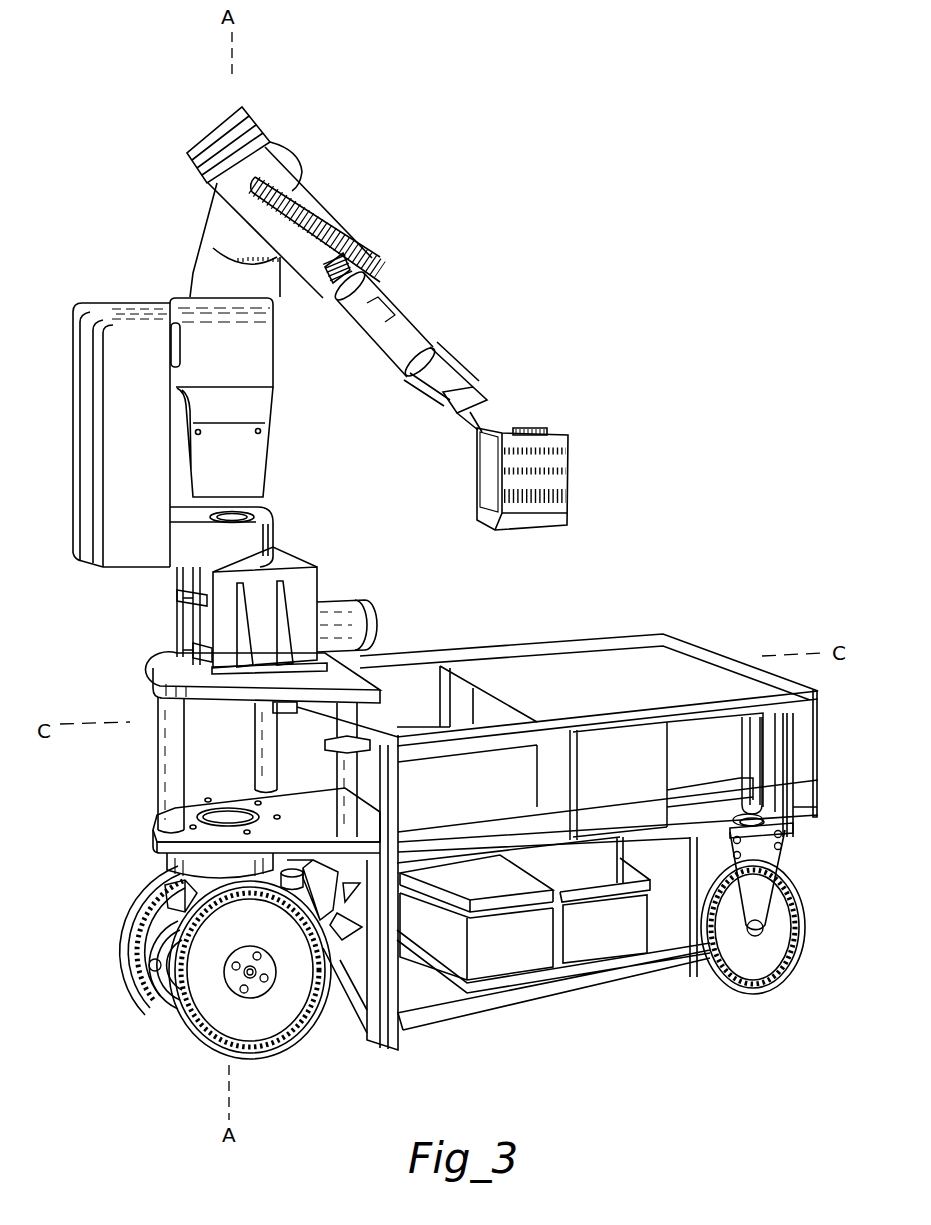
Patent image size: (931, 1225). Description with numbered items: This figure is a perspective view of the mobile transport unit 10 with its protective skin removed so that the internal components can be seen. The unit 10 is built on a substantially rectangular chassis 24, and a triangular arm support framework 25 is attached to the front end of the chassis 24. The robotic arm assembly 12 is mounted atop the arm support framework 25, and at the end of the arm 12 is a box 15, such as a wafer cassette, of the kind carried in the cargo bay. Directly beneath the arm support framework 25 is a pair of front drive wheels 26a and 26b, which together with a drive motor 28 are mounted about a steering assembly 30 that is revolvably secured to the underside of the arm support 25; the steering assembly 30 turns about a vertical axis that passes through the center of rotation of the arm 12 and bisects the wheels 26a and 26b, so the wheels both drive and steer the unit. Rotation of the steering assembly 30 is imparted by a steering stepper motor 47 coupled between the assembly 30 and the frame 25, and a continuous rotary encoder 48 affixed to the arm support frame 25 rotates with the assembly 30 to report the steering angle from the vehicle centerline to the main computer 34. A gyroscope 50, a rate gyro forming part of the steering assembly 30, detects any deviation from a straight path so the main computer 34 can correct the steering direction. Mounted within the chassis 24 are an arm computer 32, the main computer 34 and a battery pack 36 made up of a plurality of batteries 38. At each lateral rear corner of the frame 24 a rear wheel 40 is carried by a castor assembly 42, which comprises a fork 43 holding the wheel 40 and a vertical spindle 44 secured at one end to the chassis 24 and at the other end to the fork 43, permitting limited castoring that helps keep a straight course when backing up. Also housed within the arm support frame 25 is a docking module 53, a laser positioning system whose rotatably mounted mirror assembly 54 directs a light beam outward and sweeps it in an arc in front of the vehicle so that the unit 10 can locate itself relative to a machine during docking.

The mobile transport unit 10 is at (355, 1055).
The robotic arm assembly 12 is at (73, 433).
The box 15 is at (567, 512).
The chassis 24 is at (720, 658).
The arm support framework 25 is at (153, 680).
The front drive wheel 26a is at (200, 1037).
The front drive wheel 26b is at (133, 908).
The drive motor 28 is at (150, 990).
The steering assembly 30 is at (216, 930).
The arm computer 32 is at (480, 796).
The main computer 34 is at (718, 769).
The battery pack 36 is at (427, 988).
The battery 38 is at (525, 954).
The rear wheel 40 is at (766, 975).
The castor assembly 42 is at (796, 831).
The fork 43 is at (768, 884).
The vertical spindle 44 is at (760, 757).
The steering stepper motor 47 is at (260, 867).
The continuous rotary encoder 48 is at (167, 857).
The gyroscope 50 is at (250, 970).
The docking module 53 is at (170, 633).
The mirror assembly 54 is at (200, 620).